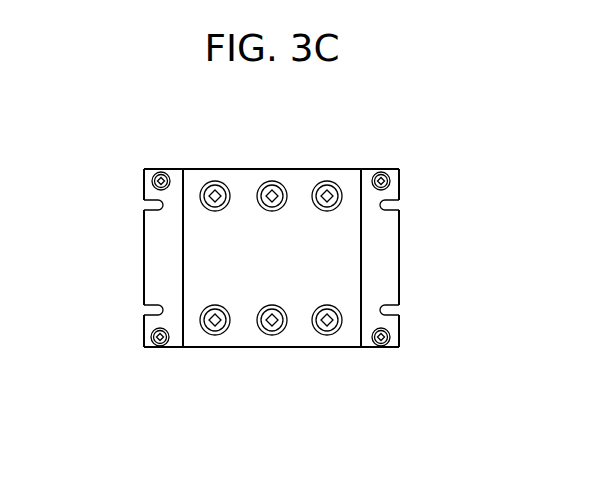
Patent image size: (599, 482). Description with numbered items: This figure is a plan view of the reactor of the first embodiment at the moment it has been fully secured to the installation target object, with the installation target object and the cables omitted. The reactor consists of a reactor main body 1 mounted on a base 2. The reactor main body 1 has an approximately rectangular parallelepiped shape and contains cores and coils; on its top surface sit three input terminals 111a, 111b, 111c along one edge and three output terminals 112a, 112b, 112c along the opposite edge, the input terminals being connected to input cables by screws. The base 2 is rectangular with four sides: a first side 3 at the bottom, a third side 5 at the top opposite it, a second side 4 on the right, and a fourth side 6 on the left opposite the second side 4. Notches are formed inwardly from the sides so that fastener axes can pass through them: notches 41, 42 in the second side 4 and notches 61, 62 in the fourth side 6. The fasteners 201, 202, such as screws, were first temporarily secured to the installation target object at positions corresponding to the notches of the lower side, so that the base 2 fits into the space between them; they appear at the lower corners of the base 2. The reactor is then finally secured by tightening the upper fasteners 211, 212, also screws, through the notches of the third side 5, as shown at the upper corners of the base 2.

The reactor main body 1 is at (267, 281).
The base 2 is at (157, 281).
The first side 3 is at (240, 347).
The second side 4 is at (399, 258).
The third side 5 is at (253, 169).
The fourth side 6 is at (144, 262).
The notch 41 is at (399, 204).
The notch 42 is at (399, 312).
The notch 61 is at (146, 206).
The notch 62 is at (146, 311).
The fastener 201 is at (160, 347).
The fastener 202 is at (381, 347).
The upper fastener 211 is at (166, 169).
The upper fastener 212 is at (381, 169).
The input terminal 111a is at (215, 335).
The input terminal 111b is at (272, 335).
The input terminal 111c is at (327, 335).
The output terminal 112a is at (216, 181).
The output terminal 112b is at (272, 181).
The output terminal 112c is at (328, 181).